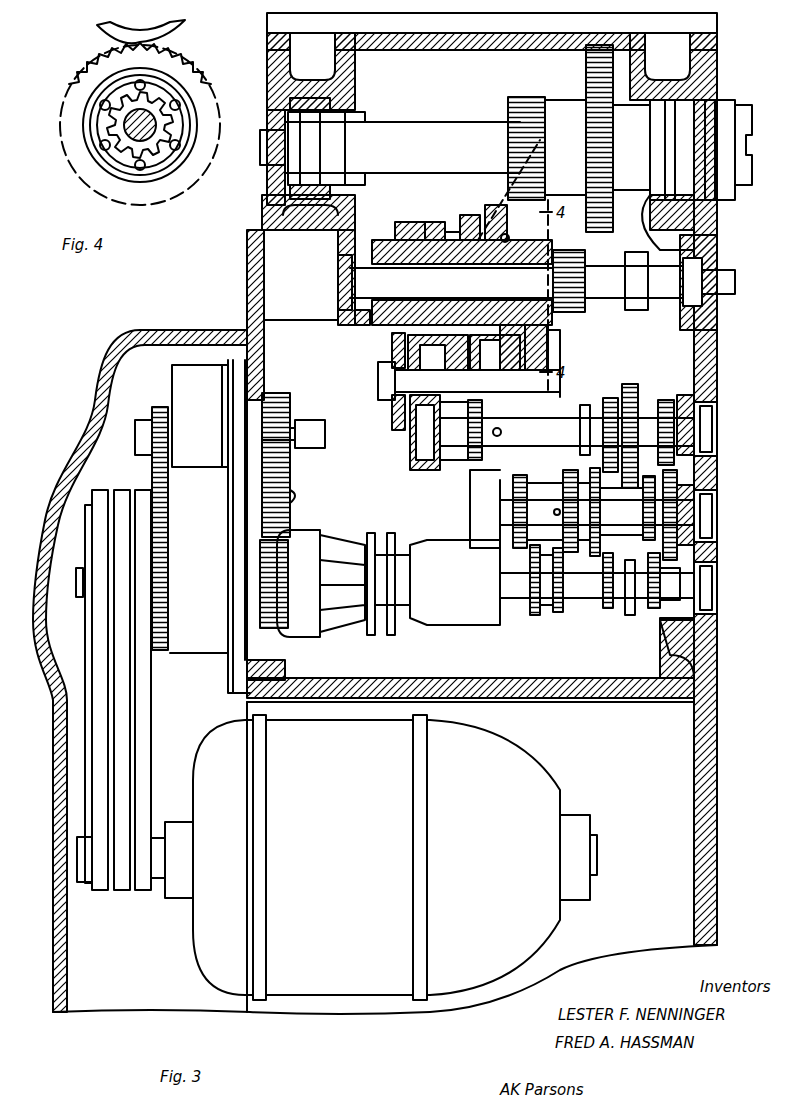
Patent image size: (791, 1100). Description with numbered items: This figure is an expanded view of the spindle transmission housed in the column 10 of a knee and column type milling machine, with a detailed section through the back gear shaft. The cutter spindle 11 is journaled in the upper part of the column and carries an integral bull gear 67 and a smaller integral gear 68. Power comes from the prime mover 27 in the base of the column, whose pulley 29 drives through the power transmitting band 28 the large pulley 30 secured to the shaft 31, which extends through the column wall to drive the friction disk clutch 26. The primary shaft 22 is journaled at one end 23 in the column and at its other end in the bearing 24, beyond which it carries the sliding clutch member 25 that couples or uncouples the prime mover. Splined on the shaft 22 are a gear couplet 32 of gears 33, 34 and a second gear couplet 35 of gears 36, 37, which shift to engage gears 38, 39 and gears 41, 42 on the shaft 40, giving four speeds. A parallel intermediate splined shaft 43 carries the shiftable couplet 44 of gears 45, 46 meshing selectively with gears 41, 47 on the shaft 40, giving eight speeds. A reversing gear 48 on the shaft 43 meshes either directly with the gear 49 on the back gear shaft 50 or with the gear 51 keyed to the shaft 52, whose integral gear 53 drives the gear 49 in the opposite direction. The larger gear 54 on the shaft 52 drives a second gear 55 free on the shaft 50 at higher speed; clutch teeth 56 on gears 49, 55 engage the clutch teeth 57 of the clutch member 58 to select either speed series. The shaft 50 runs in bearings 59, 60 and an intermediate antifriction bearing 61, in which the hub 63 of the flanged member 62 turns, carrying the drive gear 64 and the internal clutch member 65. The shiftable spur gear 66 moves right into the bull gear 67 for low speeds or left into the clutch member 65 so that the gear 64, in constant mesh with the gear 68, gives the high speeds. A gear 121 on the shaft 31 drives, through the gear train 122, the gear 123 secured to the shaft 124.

In FIG. 3, the column 10 is at (712, 735).
In FIG. 3, the cutter spindle 11 is at (400, 136).
In FIG. 3, the primary shaft 22 is at (508, 590).
In FIG. 3, the end 23 is at (690, 608).
In FIG. 3, the bearing 24 is at (445, 625).
In FIG. 3, the sliding clutch member 25 is at (400, 548).
In FIG. 3, the friction disk clutch 26 is at (332, 540).
In FIG. 3, the prime mover 27 is at (505, 755).
In FIG. 3, the power transmitting band 28 is at (143, 730).
In FIG. 3, the pulley 29 is at (82, 888).
In FIG. 3, the large pulley 30 is at (84, 520).
In FIG. 3, the shaft 31 is at (79, 590).
In FIG. 3, the gear couplet 32 is at (543, 612).
In FIG. 3, the gear 33 is at (535, 612).
In FIG. 3, the gear 34 is at (558, 612).
In FIG. 3, the second gear couplet 35 is at (630, 615).
In FIG. 3, the gear 36 is at (610, 608).
In FIG. 3, the gear 37 is at (656, 608).
In FIG. 3, the gear 38 is at (518, 500).
In FIG. 3, the gear 39 is at (568, 475).
In FIG. 3, the shaft 40 is at (500, 518).
In FIG. 3, the gear 41 is at (598, 545).
In FIG. 3, the gear 42 is at (668, 475).
In FIG. 3, the intermediate splined shaft 43 is at (550, 425).
In FIG. 3, the shiftable couplet 44 is at (586, 405).
In FIG. 3, the gear 45 is at (612, 398).
In FIG. 3, the gear 46 is at (636, 400).
In FIG. 3, the gear 47 is at (645, 500).
In FIG. 3, the reversing gear 48 is at (470, 460).
In FIG. 3, the gear 49 is at (472, 348).
In FIG. 4, the back gear shaft 50 is at (113, 122).
In FIG. 3, the back gear shaft 50 is at (665, 285).
In FIG. 3, the gear 51 is at (440, 408).
In FIG. 3, the shaft 52 is at (378, 381).
In FIG. 3, the gear 53 is at (548, 428).
In FIG. 3, the gear 54 is at (392, 350).
In FIG. 3, the second gear 55 is at (400, 236).
In FIG. 3, the clutch teeth 56 is at (410, 320).
In FIG. 3, the clutch teeth 57 is at (412, 240).
In FIG. 3, the clutch member 58 is at (430, 238).
In FIG. 3, the bearing 59 is at (345, 258).
In FIG. 3, the bearing 60 is at (690, 256).
In FIG. 3, the intermediate antifriction bearing 61 is at (493, 228).
In FIG. 4, the flanged member 62 is at (190, 110).
In FIG. 3, the flanged member 62 is at (560, 352).
In FIG. 3, the hub 63 is at (500, 272).
In FIG. 4, the drive gear 64 is at (76, 95).
In FIG. 3, the drive gear 64 is at (570, 368).
In FIG. 4, the internal gear or clutch member 65 is at (165, 162).
In FIG. 3, the internal gear or clutch member 65 is at (548, 337).
In FIG. 3, the shiftable spur gear 66 is at (585, 233).
In FIG. 3, the bull gear 67 is at (585, 70).
In FIG. 3, the gear 68 is at (520, 103).
In FIG. 3, the gear 121 is at (265, 630).
In FIG. 3, the gear train 122 is at (292, 477).
In FIG. 3, the gear 123 is at (280, 400).
In FIG. 3, the shaft 124 is at (298, 430).